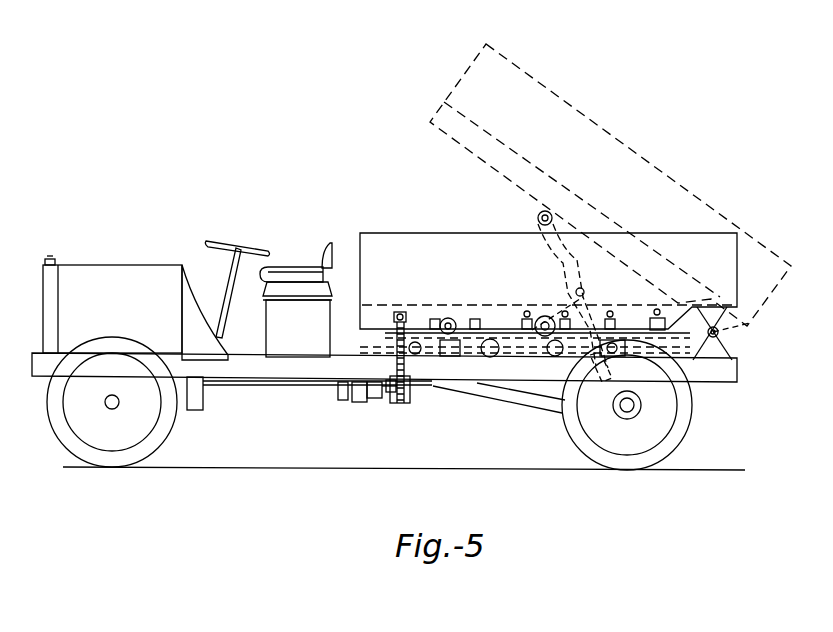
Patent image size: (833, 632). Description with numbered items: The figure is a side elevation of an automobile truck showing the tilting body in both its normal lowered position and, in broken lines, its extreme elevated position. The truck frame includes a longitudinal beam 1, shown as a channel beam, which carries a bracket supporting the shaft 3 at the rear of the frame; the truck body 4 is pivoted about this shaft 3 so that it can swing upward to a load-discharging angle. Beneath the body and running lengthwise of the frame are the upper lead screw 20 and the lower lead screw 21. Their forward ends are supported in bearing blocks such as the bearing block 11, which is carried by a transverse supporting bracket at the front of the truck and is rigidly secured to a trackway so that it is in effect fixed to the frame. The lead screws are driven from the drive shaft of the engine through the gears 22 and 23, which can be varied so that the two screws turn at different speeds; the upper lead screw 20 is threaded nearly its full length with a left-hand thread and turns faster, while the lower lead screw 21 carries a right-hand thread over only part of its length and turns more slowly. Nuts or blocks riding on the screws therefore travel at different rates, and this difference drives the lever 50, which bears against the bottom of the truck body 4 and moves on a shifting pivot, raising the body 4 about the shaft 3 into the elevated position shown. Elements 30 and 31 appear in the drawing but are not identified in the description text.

The longitudinal beam 1 is at (325, 373).
The shaft 3 is at (722, 336).
The truck body 4 is at (399, 233).
The bearing block 11 is at (420, 320).
The upper lead screw 20 is at (549, 336).
The lower lead screw 21 is at (472, 350).
The gear 22 is at (394, 316).
The gear 23 is at (396, 349).
The bearing 30 is at (628, 331).
The clutch 31 is at (449, 320).
The lever 50 is at (558, 252).